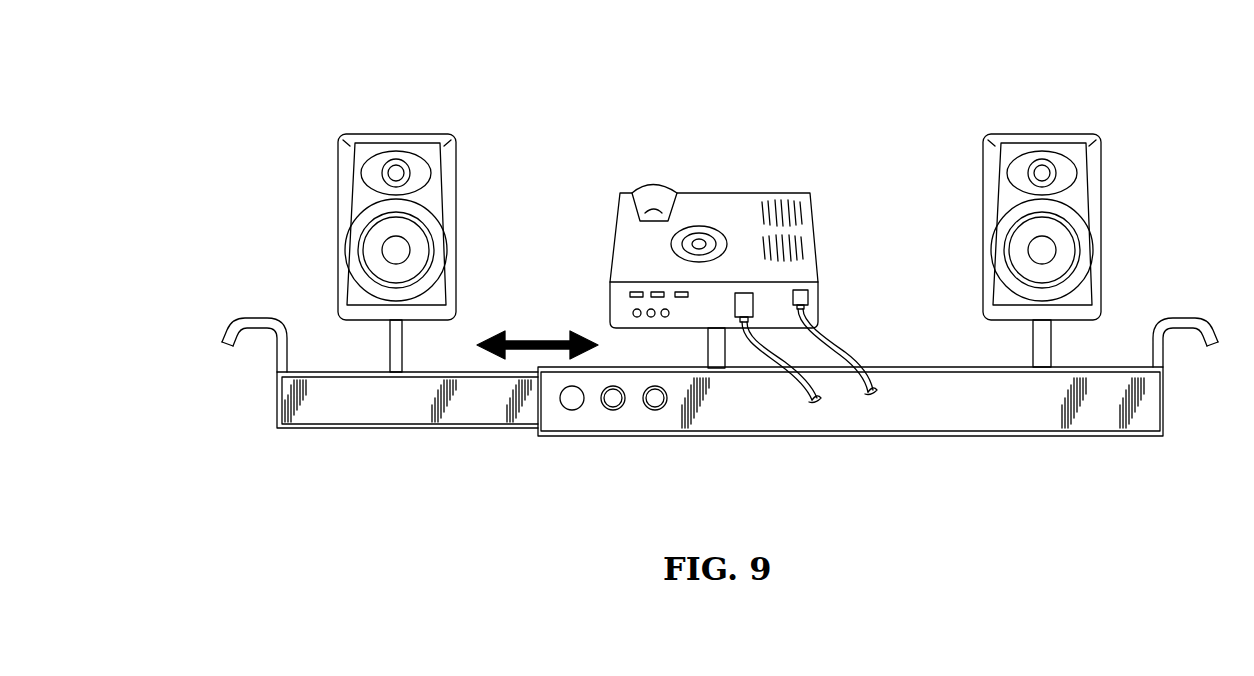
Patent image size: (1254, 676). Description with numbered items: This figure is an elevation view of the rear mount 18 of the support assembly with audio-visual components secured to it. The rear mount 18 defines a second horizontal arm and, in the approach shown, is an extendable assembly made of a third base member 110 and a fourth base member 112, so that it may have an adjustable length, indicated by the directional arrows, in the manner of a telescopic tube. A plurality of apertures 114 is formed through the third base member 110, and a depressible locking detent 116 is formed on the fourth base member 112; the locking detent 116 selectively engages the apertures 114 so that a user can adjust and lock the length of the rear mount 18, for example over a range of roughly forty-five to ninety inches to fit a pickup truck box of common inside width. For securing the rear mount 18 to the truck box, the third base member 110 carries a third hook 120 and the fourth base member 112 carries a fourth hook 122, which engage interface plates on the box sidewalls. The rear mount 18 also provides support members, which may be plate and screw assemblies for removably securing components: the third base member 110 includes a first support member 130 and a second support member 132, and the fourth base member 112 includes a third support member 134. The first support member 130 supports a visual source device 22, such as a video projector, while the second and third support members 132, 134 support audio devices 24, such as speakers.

The rear mount 18 is at (956, 46).
The visual source device 22 is at (730, 192).
The audio devices 24 is at (395, 133).
The third base member 110 is at (897, 437).
The fourth base member 112 is at (404, 428).
The apertures 114 is at (655, 411).
The depressible locking detent 116 is at (561, 403).
The third hook 120 is at (1182, 318).
The fourth hook 122 is at (258, 318).
The first support member 130 is at (728, 350).
The second support member 132 is at (1052, 357).
The third support member 134 is at (392, 357).